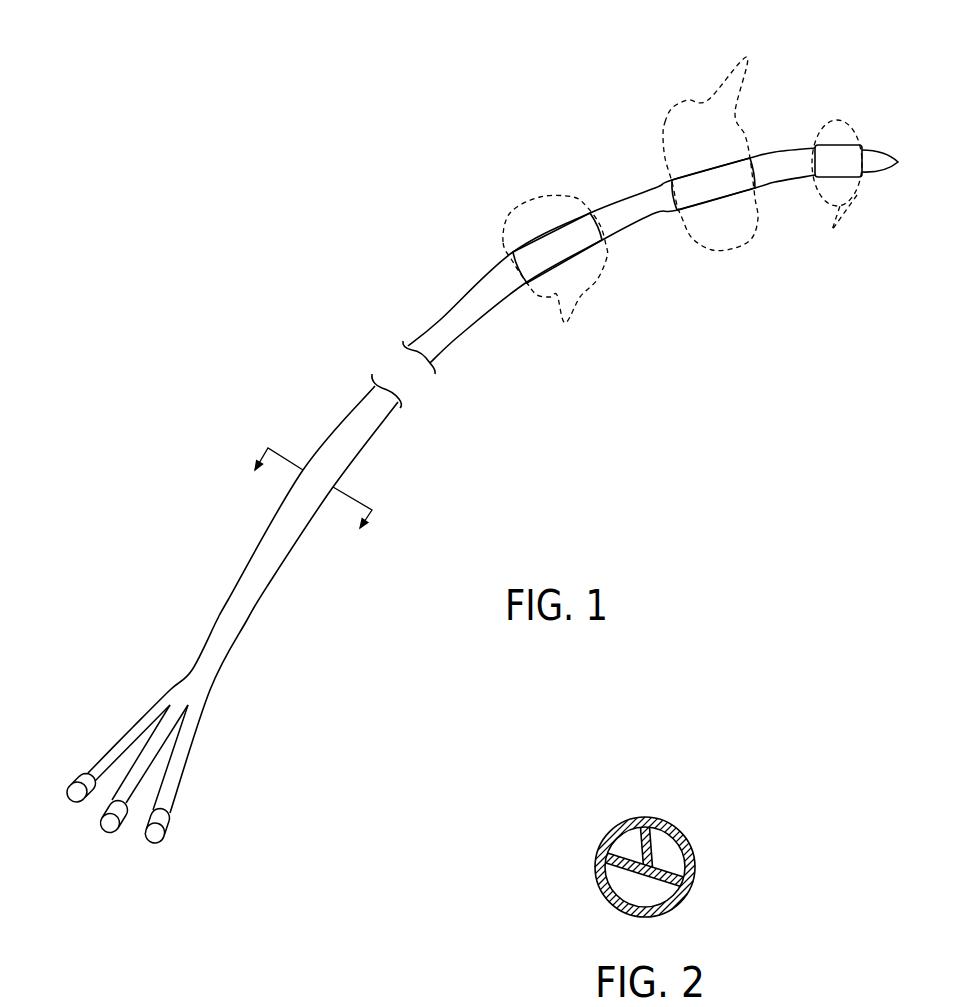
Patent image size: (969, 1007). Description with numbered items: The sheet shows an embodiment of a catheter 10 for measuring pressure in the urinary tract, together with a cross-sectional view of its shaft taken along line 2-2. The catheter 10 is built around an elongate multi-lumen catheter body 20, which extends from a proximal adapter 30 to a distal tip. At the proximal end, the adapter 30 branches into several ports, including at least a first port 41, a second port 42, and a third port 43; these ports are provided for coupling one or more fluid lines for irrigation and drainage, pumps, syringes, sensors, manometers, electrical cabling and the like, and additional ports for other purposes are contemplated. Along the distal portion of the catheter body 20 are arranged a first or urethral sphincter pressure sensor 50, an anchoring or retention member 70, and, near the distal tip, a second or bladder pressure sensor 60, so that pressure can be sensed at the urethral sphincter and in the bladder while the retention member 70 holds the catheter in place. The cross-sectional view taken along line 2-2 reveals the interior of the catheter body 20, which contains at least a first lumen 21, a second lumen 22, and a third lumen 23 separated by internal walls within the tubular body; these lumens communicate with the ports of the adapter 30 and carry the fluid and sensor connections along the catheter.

In FIG. 1, the catheter 10 is at (270, 330).
In FIG. 1, the multi-lumen catheter body 20 is at (268, 585).
In FIG. 2, the multi-lumen catheter body 20 is at (667, 832).
In FIG. 2, the first lumen 21 is at (632, 847).
In FIG. 2, the second lumen 22 is at (665, 853).
In FIG. 2, the third lumen 23 is at (640, 887).
In FIG. 1, the proximal adapter 30 is at (176, 798).
In FIG. 1, the first port 41 is at (73, 800).
In FIG. 1, the second port 42 is at (110, 833).
In FIG. 1, the third port 43 is at (165, 832).
In FIG. 1, the urethral sphincter pressure sensor 50 is at (545, 277).
In FIG. 1, the bladder pressure sensor 60 is at (843, 162).
In FIG. 1, the anchoring or retention member 70 is at (705, 170).
In FIG. 1, the line 2- 2 is at (309, 502).